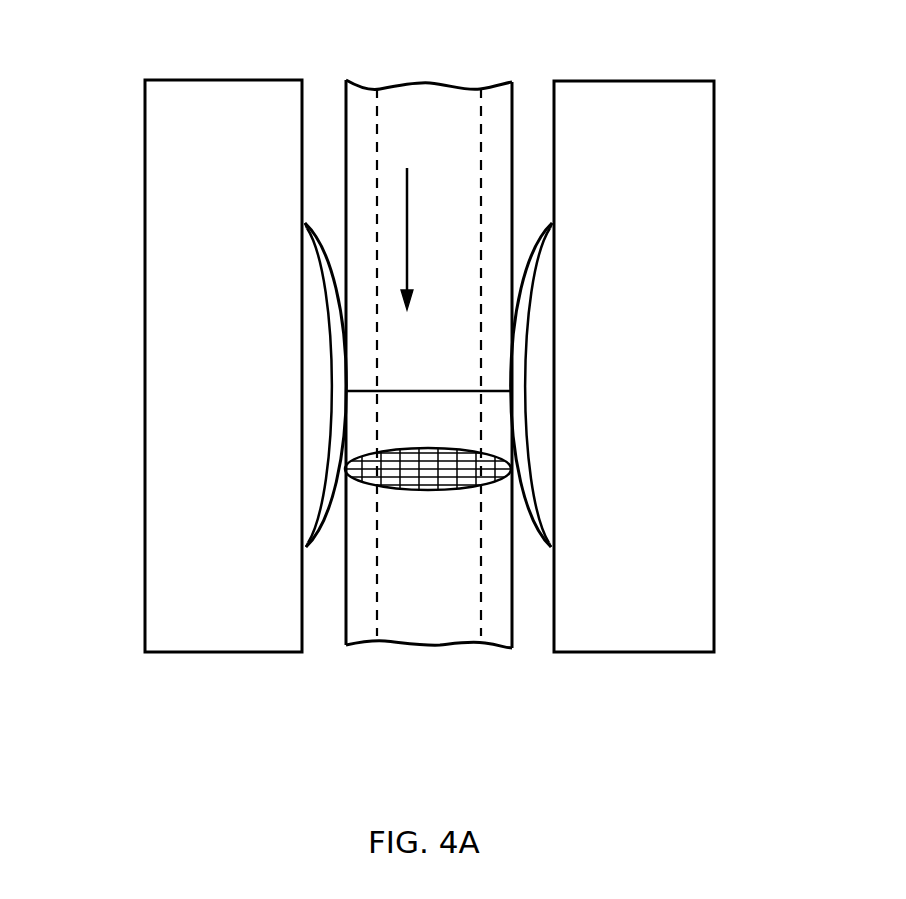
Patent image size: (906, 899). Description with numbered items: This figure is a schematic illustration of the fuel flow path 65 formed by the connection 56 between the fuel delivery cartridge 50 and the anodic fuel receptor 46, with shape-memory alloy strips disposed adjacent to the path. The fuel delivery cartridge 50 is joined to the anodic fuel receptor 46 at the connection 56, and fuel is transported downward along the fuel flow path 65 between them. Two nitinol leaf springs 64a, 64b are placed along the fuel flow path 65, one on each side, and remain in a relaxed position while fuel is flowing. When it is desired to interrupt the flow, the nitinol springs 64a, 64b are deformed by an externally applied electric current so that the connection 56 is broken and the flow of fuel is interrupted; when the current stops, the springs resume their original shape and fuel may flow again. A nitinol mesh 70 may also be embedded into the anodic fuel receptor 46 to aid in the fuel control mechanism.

The fuel delivery cartridge 50 is at (426, 98).
The anodic fuel receptor 46 is at (403, 628).
The connection 56 is at (407, 390).
The fuel flow path 65 is at (409, 242).
The nitinol mesh 70 is at (405, 450).
The nitinol spring 64a is at (323, 290).
The nitinol spring 64b is at (535, 299).